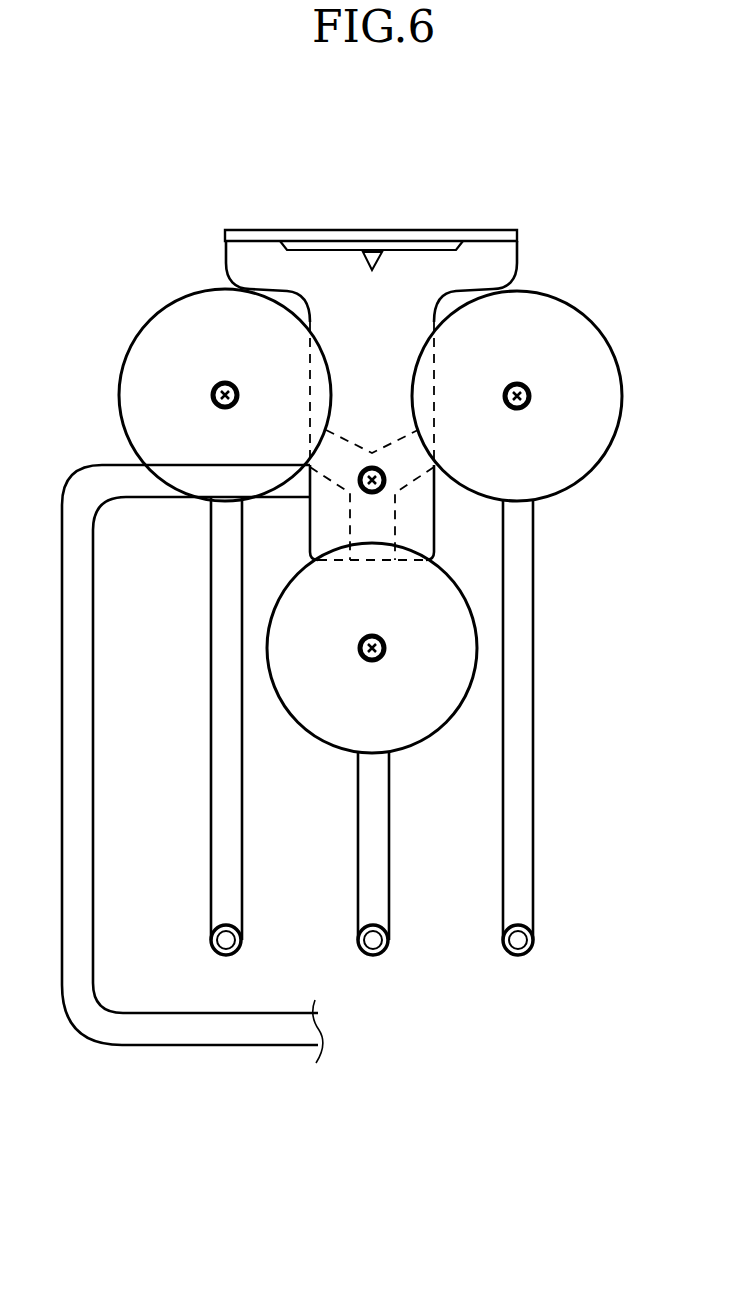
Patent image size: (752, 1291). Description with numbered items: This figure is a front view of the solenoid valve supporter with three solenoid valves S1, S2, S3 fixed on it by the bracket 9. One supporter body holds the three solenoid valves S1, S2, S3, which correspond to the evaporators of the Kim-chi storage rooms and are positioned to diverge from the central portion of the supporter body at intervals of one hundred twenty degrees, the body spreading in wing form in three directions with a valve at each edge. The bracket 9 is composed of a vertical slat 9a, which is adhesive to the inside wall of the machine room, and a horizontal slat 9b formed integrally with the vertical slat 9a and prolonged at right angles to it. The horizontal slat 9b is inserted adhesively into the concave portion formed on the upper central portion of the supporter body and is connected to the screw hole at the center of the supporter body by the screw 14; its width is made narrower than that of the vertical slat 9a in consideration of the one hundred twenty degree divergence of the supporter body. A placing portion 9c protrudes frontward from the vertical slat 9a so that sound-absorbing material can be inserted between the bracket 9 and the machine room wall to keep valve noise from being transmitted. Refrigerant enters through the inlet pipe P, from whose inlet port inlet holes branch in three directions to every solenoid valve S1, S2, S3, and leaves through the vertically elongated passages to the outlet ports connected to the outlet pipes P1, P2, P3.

The bracket 9 is at (383, 354).
The vertical slat 9a is at (302, 235).
The horizontal slat 9b is at (392, 357).
The placing portion 9c is at (442, 245).
The screw 14 is at (386, 482).
The solenoid valve S1 is at (418, 723).
The solenoid valve S2 is at (130, 367).
The solenoid valve S3 is at (597, 445).
The inlet pipe P is at (212, 1033).
The outlet pipe P1 is at (367, 855).
The outlet pipe P2 is at (223, 738).
The outlet pipe P3 is at (522, 843).